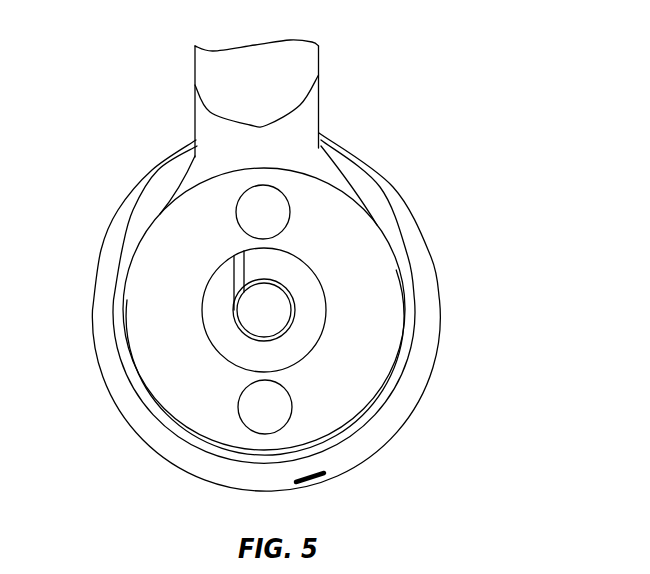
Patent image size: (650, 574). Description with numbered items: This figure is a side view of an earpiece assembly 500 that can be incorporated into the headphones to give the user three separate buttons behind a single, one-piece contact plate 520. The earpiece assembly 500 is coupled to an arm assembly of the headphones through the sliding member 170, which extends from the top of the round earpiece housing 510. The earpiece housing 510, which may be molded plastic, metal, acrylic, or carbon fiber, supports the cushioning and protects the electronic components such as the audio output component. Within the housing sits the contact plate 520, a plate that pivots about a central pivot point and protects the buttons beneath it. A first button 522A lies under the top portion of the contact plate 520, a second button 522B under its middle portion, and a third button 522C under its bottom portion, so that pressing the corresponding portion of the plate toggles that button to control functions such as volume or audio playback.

The earpiece assembly 500 is at (458, 66).
The sliding member 170 is at (306, 131).
The earpiece housing 510 is at (137, 425).
The contact plate 520 is at (165, 299).
The first button 522A is at (288, 220).
The second button 522B is at (293, 302).
The third button 522C is at (292, 399).